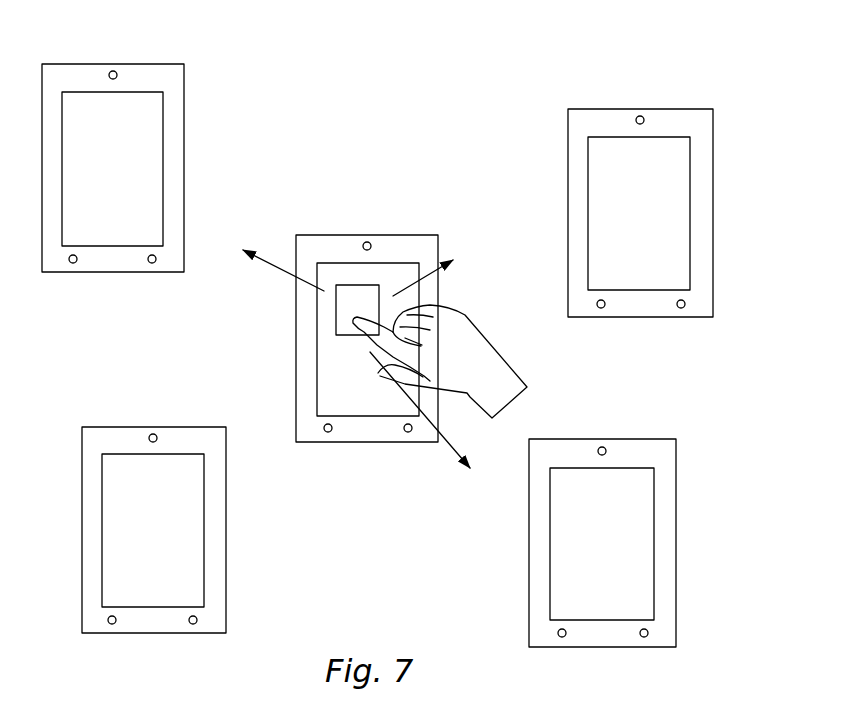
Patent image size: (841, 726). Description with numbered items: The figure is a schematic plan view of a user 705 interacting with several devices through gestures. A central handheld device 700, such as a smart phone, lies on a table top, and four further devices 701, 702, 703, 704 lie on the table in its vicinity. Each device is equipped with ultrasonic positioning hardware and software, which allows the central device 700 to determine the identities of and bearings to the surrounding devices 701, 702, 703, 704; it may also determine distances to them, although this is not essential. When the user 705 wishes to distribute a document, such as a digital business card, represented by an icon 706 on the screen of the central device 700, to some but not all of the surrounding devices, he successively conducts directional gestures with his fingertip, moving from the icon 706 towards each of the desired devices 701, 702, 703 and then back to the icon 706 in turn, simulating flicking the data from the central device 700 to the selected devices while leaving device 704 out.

The central handheld device 700 is at (400, 253).
The further device 701 is at (151, 82).
The further device 702 is at (680, 125).
The further device 703 is at (650, 453).
The further device 704 is at (186, 443).
The user 705 is at (453, 353).
The icon 706 is at (352, 303).